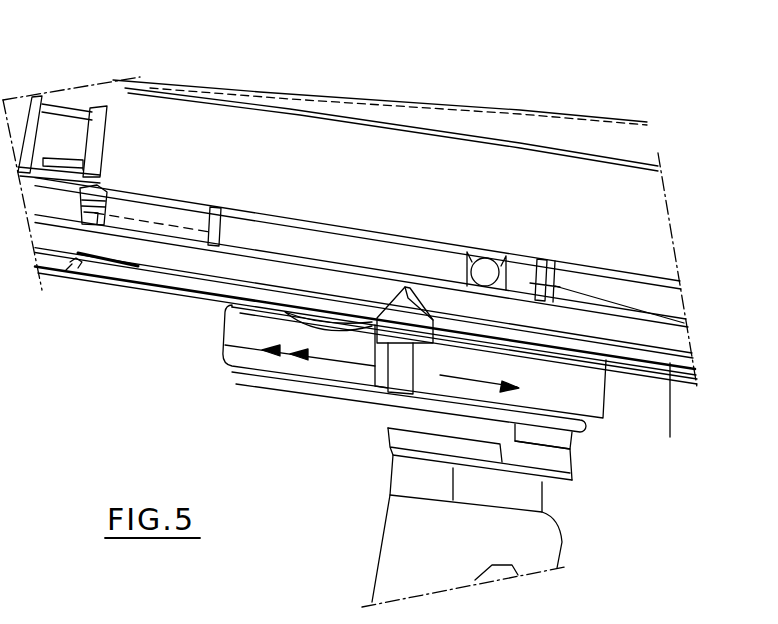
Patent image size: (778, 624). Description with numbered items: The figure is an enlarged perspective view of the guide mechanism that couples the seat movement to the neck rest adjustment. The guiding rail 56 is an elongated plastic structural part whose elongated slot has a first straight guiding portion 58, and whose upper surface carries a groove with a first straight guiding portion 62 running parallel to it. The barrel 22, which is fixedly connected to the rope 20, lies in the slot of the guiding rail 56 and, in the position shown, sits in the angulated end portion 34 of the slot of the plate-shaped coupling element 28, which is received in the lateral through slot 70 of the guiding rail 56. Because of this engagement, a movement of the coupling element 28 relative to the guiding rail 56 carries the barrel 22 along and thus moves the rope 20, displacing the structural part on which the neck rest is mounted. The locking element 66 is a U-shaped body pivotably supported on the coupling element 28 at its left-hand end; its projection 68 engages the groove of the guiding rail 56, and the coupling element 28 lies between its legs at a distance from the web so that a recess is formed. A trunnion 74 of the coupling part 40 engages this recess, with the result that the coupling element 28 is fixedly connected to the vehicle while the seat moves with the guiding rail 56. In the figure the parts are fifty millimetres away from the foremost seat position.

The rope 20 is at (186, 215).
The barrel 22 is at (488, 262).
The coupling element 28 is at (363, 250).
The angulated end portion 34 is at (503, 260).
The coupling part 40 is at (370, 537).
The guiding rail 56 is at (642, 152).
The first straight guiding portion 58 is at (125, 225).
The first straight guiding portion 62 is at (161, 258).
The locking element 66 is at (607, 434).
The projection 68 is at (400, 322).
The through slot 70 is at (670, 437).
The trunnion 74 is at (562, 435).